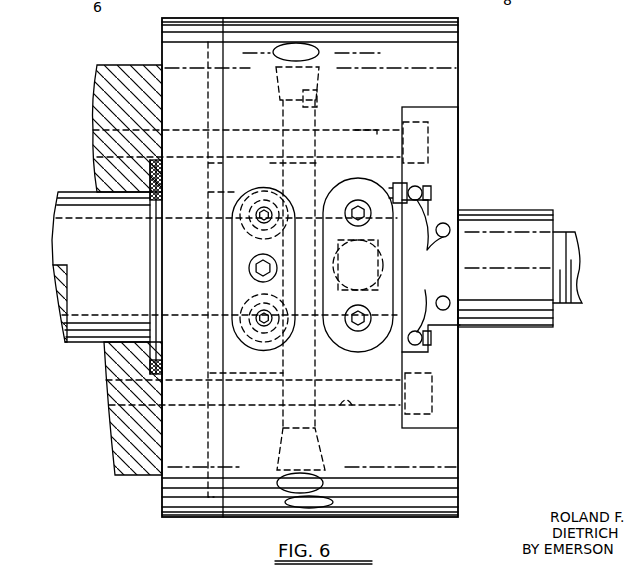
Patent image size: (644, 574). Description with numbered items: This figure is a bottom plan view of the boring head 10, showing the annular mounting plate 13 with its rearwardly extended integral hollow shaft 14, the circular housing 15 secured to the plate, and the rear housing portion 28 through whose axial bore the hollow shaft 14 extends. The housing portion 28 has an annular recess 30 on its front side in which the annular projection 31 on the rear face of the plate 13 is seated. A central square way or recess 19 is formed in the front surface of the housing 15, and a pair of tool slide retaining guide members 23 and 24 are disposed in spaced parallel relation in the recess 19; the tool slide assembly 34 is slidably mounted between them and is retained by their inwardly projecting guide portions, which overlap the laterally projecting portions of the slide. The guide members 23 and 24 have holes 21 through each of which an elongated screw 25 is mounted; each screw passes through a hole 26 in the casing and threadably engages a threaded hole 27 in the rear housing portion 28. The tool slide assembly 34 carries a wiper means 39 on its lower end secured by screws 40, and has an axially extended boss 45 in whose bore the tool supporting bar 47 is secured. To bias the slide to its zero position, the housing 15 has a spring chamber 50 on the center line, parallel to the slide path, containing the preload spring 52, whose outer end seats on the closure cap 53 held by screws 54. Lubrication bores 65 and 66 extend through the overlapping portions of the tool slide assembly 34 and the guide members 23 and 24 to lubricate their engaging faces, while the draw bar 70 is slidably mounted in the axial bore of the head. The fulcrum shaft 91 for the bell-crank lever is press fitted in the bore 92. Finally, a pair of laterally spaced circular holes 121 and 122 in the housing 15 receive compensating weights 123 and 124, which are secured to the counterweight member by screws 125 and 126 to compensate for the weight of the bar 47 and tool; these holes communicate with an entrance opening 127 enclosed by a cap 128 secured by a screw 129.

The boring head 10 is at (370, 14).
The annular mounting plate 13 is at (200, 32).
The annular housing 15 is at (278, 36).
The hollow shaft 14 is at (93, 322).
The square way or recess 19 is at (458, 108).
The holes 21 is at (437, 125).
The tool slide retaining guide member 23 is at (452, 422).
The tool slide retaining guide member 24 is at (445, 110).
The elongated screw 25 is at (428, 150).
The hole 26 is at (375, 130).
The threaded hole 27 is at (104, 135).
The rear housing portion 28 is at (128, 78).
The annular recess 30 is at (163, 362).
The annular projection 31 is at (148, 174).
The tool slide assembly 34 is at (458, 212).
The wiper means 39 is at (450, 257).
The screws 40 is at (443, 297).
The boss or hollow portion 45 is at (535, 220).
The tool supporting bar 47 is at (573, 255).
The spring chamber 50 is at (336, 197).
The preload spring 52 is at (417, 333).
The spring chamber closure cap 53 is at (353, 348).
The screws 54 is at (341, 196).
The lubrication bore 65 is at (392, 352).
The lubrication bore 66 is at (396, 190).
The draw bar 70 is at (55, 305).
The fulcrum shaft 91 is at (297, 158).
The bore 92 is at (318, 91).
The circular hole 121 is at (262, 155).
The circular hole 122 is at (262, 365).
The compensating weight 123 is at (216, 233).
The compensating weight 124 is at (245, 307).
The screw 125 is at (216, 210).
The screw 126 is at (232, 333).
The entrance opening 127 is at (242, 270).
The cap 128 is at (165, 280).
The screw 129 is at (250, 257).